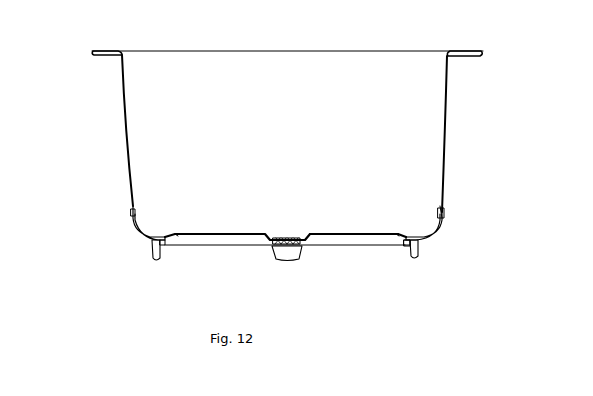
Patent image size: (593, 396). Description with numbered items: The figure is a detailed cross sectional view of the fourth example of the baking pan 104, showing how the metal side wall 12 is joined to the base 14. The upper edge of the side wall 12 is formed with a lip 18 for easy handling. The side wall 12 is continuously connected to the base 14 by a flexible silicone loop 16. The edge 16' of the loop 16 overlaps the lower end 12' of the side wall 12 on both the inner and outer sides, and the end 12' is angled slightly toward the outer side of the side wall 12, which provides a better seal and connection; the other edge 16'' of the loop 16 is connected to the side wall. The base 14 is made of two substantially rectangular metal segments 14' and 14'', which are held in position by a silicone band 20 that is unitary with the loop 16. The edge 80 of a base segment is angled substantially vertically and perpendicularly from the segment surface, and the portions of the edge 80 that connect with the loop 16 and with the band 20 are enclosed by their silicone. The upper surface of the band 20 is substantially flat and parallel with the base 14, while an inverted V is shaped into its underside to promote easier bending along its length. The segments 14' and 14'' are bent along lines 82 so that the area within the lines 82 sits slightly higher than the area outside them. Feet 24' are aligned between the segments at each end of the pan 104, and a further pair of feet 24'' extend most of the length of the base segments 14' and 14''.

The side wall 12 is at (314, 133).
The lower end of the side wall 12' is at (462, 215).
The base 14 is at (101, 223).
The base segment 14' is at (285, 222).
The base segment 14'' is at (354, 209).
The silicone loop 16 is at (444, 233).
The inner edge of the silicone loop 16' is at (428, 201).
The outer edge of the silicone loop 16'' is at (395, 260).
The lip 18 is at (94, 58).
The silicone band 20 is at (290, 237).
The feet 24' is at (294, 262).
The feet 24'' is at (280, 266).
The edge of the base segment 80 is at (164, 247).
The bend line 82 is at (177, 233).
The baking pan 104 is at (477, 162).